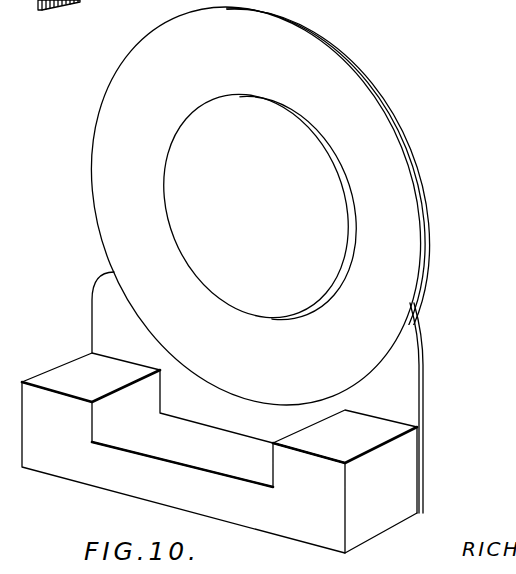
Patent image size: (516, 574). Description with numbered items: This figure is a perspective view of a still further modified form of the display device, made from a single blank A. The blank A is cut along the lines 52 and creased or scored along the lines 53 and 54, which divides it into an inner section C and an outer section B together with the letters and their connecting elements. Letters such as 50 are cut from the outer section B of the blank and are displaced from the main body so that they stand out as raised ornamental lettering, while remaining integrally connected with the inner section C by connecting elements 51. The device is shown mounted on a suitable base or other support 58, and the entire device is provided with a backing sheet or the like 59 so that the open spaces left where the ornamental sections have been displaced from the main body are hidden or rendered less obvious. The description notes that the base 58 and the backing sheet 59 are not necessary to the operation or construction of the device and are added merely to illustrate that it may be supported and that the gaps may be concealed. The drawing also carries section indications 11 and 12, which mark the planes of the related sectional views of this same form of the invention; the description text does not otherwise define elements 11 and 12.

The section line 11- 11 is at (240, 552).
The section line 12- 12 is at (155, 332).
The letters 50 is at (261, 228).
The connecting elements 51 is at (342, 125).
The cut lines 52 is at (318, 97).
The crease or score lines 53 is at (302, 100).
The crease or score lines 54 is at (272, 55).
The base or support 58 is at (380, 477).
The backing sheet 59 is at (392, 107).
The blank A is at (402, 160).
The outer section B is at (398, 222).
The inner section C is at (259, 206).